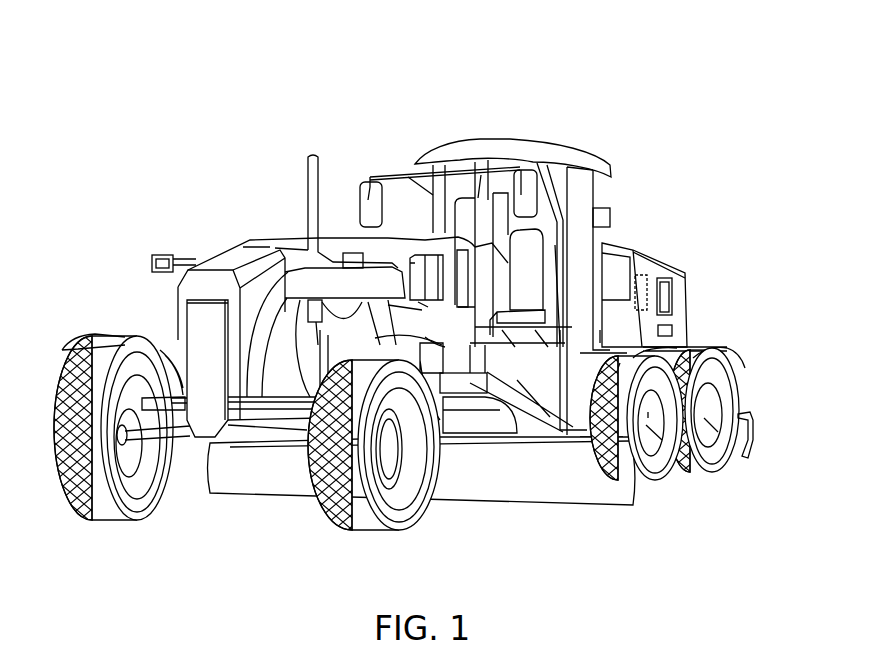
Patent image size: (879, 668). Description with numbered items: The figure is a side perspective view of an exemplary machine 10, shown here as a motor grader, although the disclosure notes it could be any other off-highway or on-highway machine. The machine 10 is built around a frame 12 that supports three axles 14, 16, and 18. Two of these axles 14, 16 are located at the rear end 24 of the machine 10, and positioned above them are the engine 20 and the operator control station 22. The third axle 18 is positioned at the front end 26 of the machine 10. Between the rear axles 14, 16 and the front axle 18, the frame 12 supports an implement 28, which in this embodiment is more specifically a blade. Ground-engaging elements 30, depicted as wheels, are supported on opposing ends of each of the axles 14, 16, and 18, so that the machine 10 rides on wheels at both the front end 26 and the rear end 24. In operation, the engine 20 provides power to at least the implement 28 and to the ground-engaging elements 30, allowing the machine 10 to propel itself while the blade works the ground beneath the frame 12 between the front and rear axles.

The machine 10 is at (401, 108).
The frame 12 is at (572, 377).
The axle 14 is at (665, 440).
The axle 16 is at (720, 435).
The axle 18 is at (423, 497).
The engine 20 is at (655, 287).
The operator control station 22 is at (578, 197).
The rear end 24 is at (662, 269).
The front end 26 is at (95, 288).
The implement 28 is at (528, 490).
The ground-engaging elements 30 is at (723, 380).